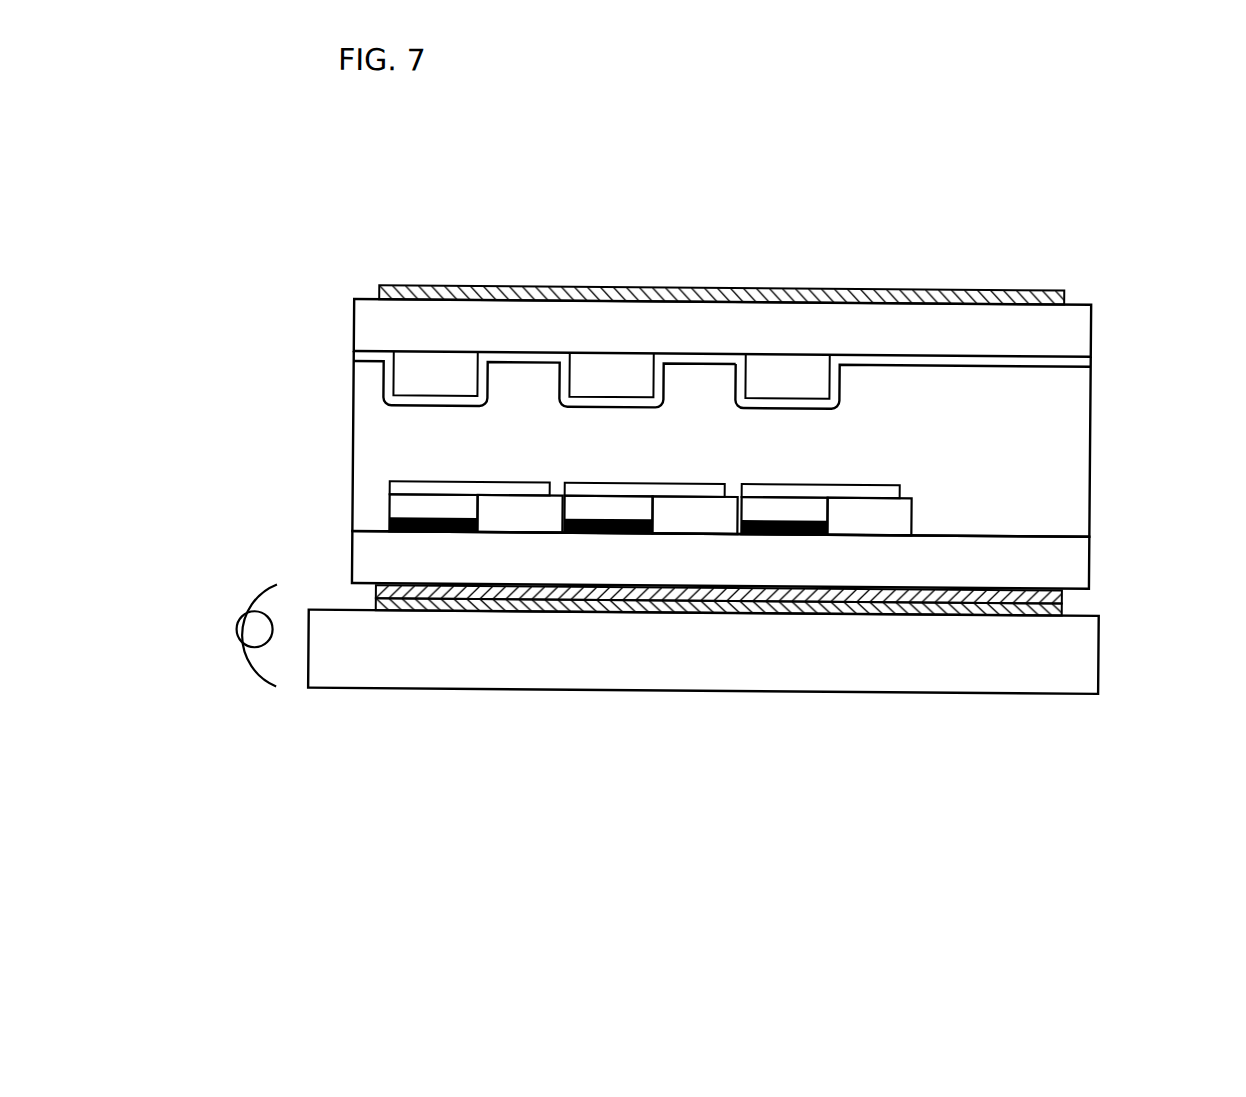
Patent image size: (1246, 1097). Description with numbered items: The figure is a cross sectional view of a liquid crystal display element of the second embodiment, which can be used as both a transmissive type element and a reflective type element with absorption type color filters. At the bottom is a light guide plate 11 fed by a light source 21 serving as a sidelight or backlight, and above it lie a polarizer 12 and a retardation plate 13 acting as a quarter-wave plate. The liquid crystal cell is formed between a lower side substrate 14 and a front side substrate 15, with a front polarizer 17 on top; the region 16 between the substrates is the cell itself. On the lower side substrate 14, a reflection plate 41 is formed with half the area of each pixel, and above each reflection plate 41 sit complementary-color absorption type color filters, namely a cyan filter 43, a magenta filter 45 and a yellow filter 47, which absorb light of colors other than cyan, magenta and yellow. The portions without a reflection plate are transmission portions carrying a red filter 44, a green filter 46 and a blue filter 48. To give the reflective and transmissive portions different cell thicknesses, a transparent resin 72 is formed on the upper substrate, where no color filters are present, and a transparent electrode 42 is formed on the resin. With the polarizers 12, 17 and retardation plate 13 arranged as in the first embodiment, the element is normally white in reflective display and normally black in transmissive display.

The light guide plate 11 is at (1058, 653).
The polarizer 12 is at (1050, 612).
The retardation plate 13 is at (1063, 592).
The lower side substrate 14 is at (376, 551).
The front side substrate 15 is at (376, 323).
The cell gap / liquid layer 16 is at (378, 437).
The polarizer 17 is at (542, 285).
The light source 21 is at (246, 643).
The reflection plate 41 is at (432, 531).
The transparent electrode 42 is at (783, 480).
The absorption type color filter (cyan) 43 is at (448, 505).
The absorption type color filter (red) 44 is at (532, 505).
The absorption type color filter (magenta) 45 is at (610, 505).
The absorption type color filter (green) 46 is at (705, 505).
The absorption type color filter (yellow) 47 is at (790, 505).
The absorption type color filter (blue) 48 is at (858, 505).
The transparent resin 72 is at (790, 372).